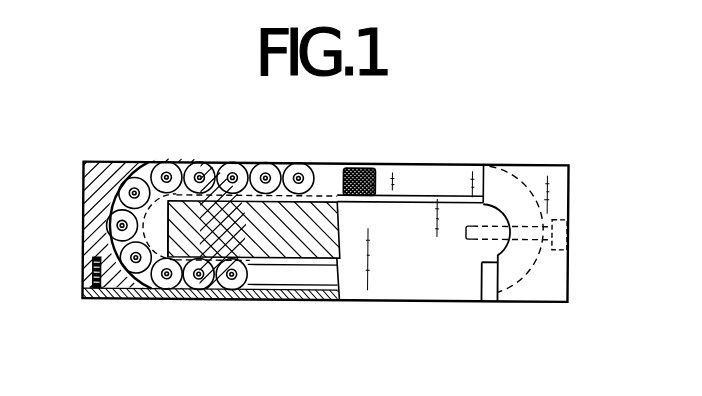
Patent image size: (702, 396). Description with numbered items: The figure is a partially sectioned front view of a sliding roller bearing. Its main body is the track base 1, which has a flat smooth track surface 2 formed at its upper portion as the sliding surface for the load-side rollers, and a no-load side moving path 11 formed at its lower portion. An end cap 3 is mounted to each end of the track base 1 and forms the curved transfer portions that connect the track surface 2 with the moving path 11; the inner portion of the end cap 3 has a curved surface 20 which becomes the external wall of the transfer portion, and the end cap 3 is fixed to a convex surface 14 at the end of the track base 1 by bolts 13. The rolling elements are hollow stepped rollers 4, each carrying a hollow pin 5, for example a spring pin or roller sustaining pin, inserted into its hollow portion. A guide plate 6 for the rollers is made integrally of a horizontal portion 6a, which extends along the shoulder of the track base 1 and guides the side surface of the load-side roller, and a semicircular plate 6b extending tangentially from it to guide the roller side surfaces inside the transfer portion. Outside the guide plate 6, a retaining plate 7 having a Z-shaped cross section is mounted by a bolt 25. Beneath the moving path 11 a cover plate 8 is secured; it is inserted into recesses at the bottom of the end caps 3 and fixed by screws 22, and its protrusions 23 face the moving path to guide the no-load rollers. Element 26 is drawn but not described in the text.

The track base 1 is at (411, 299).
The track surface 2 is at (328, 197).
The end cap 3 is at (83, 181).
The hollow stepped roller 4 is at (232, 164).
The hollow pin 5 is at (264, 164).
The guide plate 6 is at (210, 223).
The horizontal portion 6a is at (247, 202).
The semicircular plate 6b is at (167, 229).
The retaining plate 7 is at (423, 169).
The cover plate 8 is at (168, 281).
The moving path 11 is at (267, 274).
The bolt 13 is at (563, 229).
The convex surface 14 is at (497, 302).
The curved surface 20 is at (110, 209).
The screw 22 is at (97, 291).
The protrusion 23 is at (303, 288).
The bolt 25 is at (363, 169).
The end plate 26 is at (330, 277).